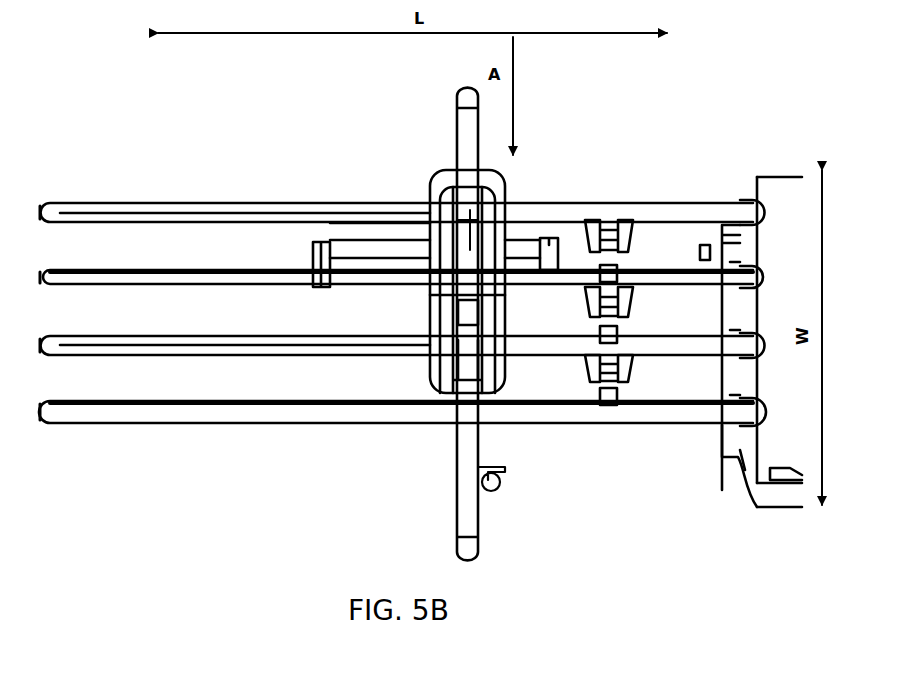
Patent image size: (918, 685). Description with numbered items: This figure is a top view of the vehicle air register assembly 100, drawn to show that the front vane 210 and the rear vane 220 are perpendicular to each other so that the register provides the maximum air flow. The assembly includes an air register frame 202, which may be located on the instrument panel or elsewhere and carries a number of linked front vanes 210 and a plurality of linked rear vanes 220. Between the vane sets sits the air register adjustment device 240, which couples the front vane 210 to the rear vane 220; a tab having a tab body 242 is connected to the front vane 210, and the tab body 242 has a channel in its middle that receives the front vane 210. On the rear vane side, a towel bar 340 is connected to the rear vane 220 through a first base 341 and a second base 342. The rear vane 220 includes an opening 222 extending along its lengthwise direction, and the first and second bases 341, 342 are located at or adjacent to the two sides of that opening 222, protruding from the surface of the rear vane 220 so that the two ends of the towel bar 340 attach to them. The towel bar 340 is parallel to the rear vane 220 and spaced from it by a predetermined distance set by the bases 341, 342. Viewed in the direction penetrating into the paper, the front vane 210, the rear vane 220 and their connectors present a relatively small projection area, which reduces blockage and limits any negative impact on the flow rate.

The vehicle air register assembly 100 is at (690, 80).
The air register frame 202 is at (722, 458).
The front vane 210 is at (462, 130).
The rear vane 220 is at (237, 426).
The opening 222 is at (648, 252).
The air register adjustment device 240 is at (370, 298).
The tab body 242 is at (500, 197).
The towel bar 340 is at (350, 255).
The first base 341 is at (550, 238).
The second base 342 is at (313, 245).